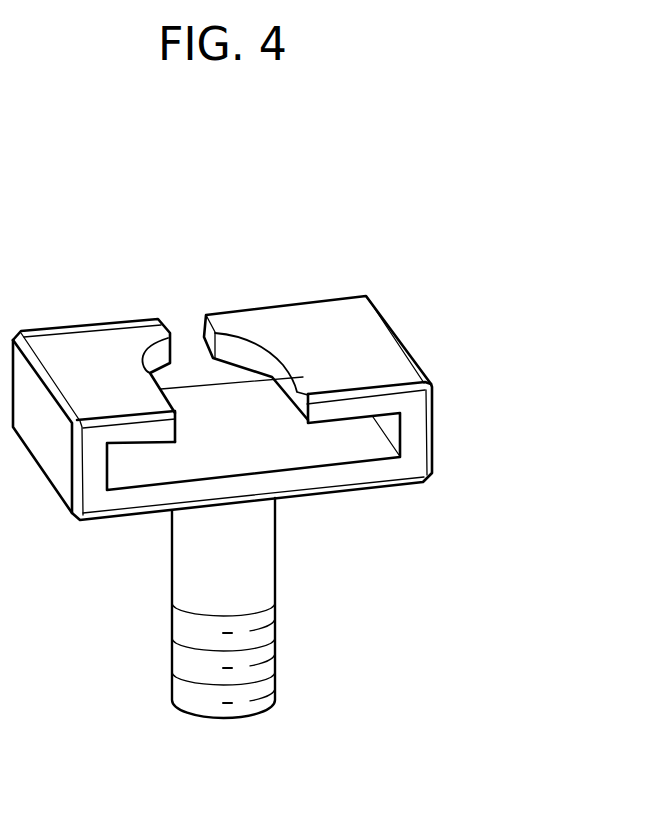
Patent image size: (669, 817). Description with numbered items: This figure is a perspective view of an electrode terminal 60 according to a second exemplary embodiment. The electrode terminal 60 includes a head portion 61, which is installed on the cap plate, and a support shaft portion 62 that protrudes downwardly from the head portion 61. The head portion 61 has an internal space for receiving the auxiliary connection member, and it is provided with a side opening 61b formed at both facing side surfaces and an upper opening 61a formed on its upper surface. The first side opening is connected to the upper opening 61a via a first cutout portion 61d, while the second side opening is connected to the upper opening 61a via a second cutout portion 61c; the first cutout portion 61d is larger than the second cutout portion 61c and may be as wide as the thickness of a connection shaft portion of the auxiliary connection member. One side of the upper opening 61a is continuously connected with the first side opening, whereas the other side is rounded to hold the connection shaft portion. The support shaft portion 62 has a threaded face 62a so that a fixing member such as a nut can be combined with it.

The electrode terminal 60 is at (258, 467).
The head portion 61 is at (370, 323).
The upper opening 61a is at (297, 392).
The side opening 61b is at (343, 445).
The second cutout portion 61c is at (167, 338).
The first cutout portion 61d is at (200, 410).
The support shaft portion 62 is at (258, 608).
The threaded face 62a is at (275, 649).